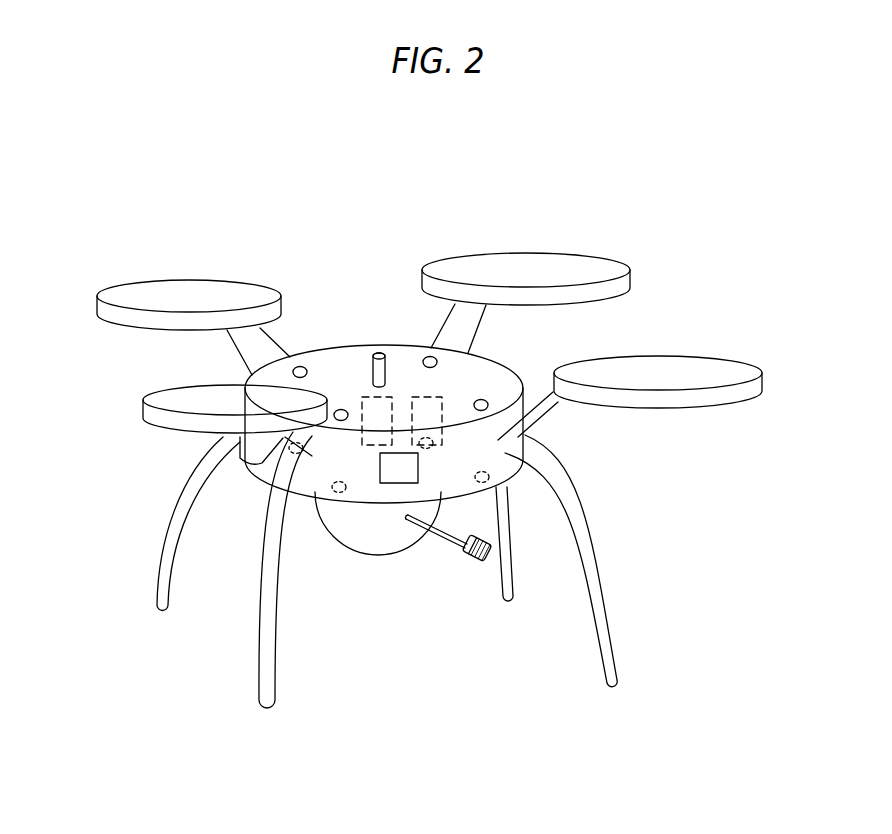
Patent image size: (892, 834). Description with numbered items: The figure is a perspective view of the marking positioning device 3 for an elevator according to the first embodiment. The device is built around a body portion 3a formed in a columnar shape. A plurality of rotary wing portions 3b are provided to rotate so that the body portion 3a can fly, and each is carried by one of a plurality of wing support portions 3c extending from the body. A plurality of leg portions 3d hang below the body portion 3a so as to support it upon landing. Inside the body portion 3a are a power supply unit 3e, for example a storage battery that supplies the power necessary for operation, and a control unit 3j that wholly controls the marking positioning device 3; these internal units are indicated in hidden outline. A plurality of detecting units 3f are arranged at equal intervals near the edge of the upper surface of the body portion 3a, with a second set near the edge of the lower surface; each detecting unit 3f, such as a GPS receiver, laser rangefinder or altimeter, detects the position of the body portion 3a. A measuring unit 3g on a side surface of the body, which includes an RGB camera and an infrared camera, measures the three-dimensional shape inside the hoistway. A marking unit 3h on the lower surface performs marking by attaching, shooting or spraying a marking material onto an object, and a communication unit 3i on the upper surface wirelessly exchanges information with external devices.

The marking positioning device 3 is at (257, 244).
The body portion 3a is at (525, 378).
The rotary wing portions 3b is at (143, 292).
The wing support portions 3c is at (483, 320).
The leg portions 3d is at (165, 541).
The power supply unit 3e is at (390, 484).
The detecting units 3f is at (299, 364).
The measuring unit 3g is at (392, 553).
The marking unit 3h is at (467, 560).
The communication unit 3i is at (376, 350).
The control unit 3j is at (490, 478).